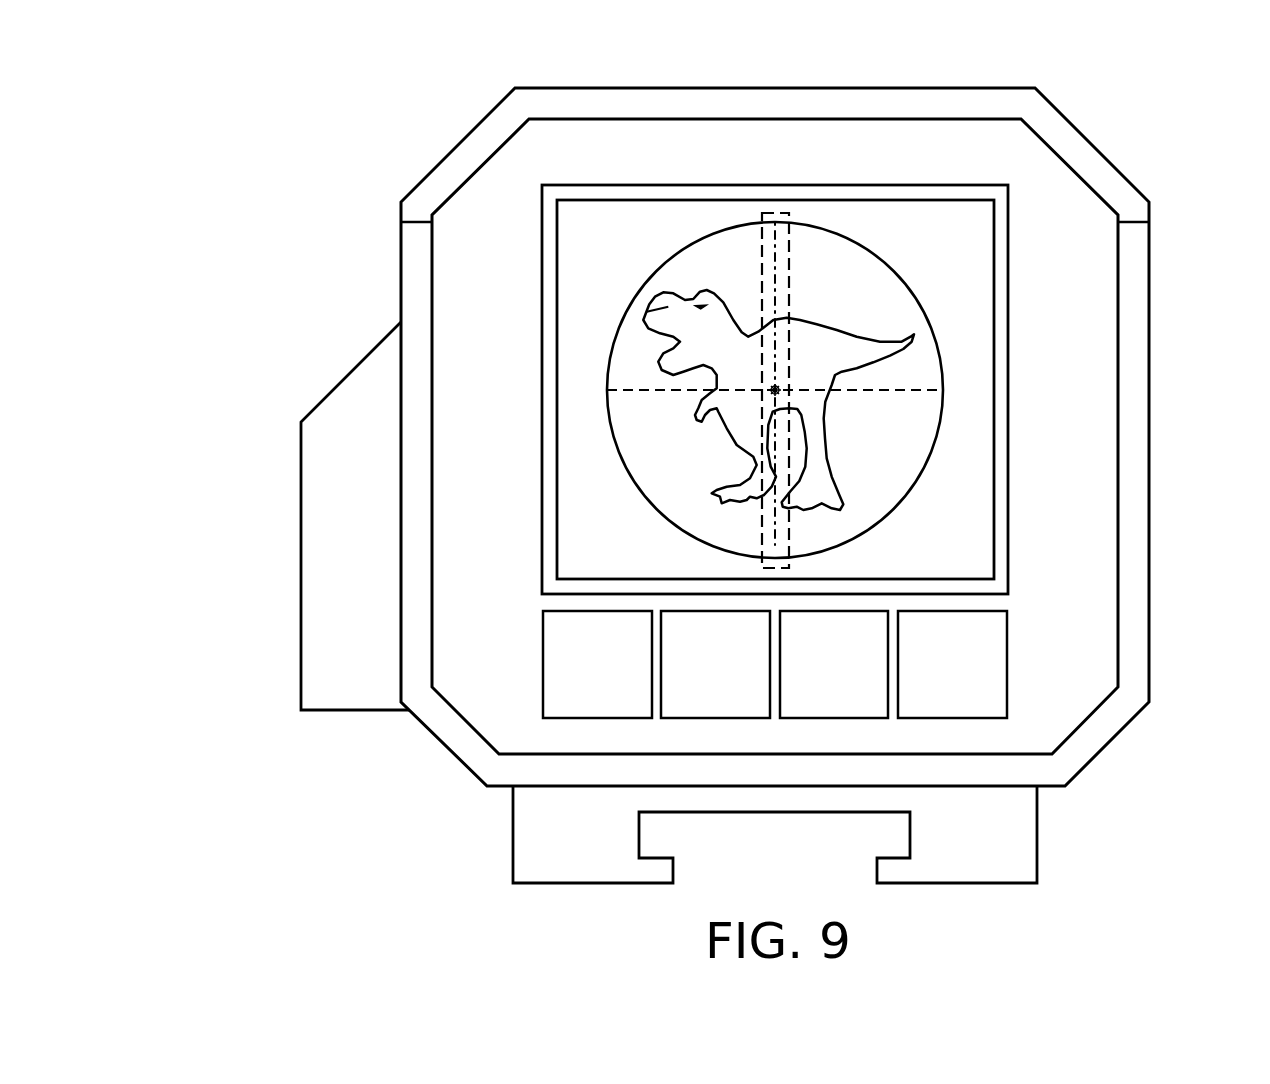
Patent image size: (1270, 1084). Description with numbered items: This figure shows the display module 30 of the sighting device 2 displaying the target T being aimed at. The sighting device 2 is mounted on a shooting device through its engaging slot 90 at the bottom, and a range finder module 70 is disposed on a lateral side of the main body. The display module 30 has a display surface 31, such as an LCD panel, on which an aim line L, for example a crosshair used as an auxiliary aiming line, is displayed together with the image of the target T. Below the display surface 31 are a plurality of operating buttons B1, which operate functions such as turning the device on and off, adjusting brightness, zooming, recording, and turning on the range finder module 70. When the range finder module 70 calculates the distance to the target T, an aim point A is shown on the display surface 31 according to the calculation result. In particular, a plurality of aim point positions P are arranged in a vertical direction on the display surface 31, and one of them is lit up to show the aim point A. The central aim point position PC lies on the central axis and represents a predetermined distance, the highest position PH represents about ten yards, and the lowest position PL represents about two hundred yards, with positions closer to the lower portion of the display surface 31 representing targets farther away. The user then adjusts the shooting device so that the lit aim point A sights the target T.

The sighting device 2 is at (372, 86).
The display module 30 is at (1012, 270).
The display surface 31 is at (968, 323).
The range finder module 70 is at (314, 611).
The engaging slot 90 is at (773, 813).
The operating buttons B1 is at (1012, 645).
The aim line L is at (631, 476).
The target T is at (668, 307).
The aim point positions P is at (785, 213).
The highest position PH is at (775, 236).
The lowest position PL is at (775, 545).
The central aim point position PC is at (778, 388).
The aim point A is at (775, 390).